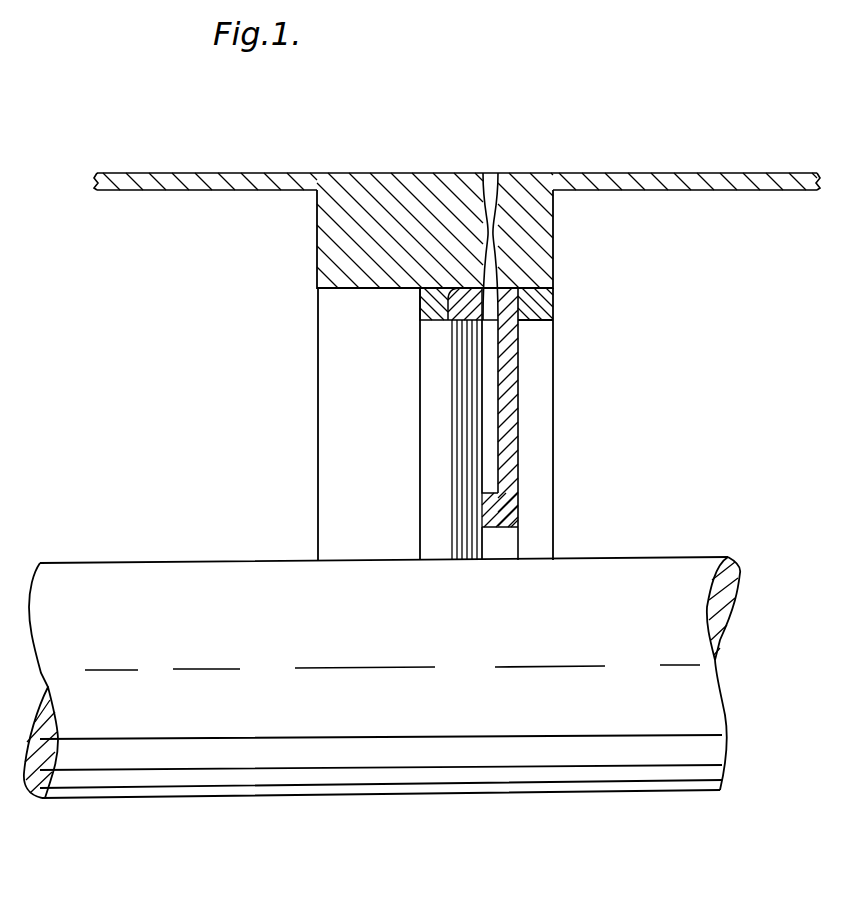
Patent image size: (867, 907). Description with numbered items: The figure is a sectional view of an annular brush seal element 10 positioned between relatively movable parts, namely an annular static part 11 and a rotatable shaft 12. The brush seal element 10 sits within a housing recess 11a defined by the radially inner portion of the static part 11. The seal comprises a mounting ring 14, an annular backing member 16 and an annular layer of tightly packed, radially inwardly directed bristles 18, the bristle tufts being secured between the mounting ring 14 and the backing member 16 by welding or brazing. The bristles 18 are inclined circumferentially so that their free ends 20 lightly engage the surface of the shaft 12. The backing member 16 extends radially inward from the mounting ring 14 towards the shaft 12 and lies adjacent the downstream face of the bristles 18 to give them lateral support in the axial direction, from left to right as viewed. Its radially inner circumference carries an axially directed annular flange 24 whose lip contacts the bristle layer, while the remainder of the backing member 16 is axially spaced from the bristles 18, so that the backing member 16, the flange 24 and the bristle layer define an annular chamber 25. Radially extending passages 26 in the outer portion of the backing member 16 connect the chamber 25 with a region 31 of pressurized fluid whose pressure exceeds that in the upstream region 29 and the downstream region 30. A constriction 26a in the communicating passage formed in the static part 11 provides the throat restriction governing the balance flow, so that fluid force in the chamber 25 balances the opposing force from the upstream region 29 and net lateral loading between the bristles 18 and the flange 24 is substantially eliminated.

The brush seal element 10 is at (410, 481).
The static part 11 is at (377, 205).
The housing recess 11a is at (348, 292).
The rotatable shaft 12 is at (177, 762).
The mounting ring 14 is at (455, 288).
The backing member 16 is at (508, 393).
The bristles 18 is at (452, 520).
The free ends of the bristles 20 is at (485, 553).
The annular flange 24 is at (492, 510).
The annular chamber 25 is at (492, 460).
The radially extending passages 26 is at (492, 312).
The constriction 26a is at (495, 230).
The upstream region 29 is at (132, 425).
The downstream region 30 is at (785, 389).
The region of pressurized fluid 31 is at (442, 115).